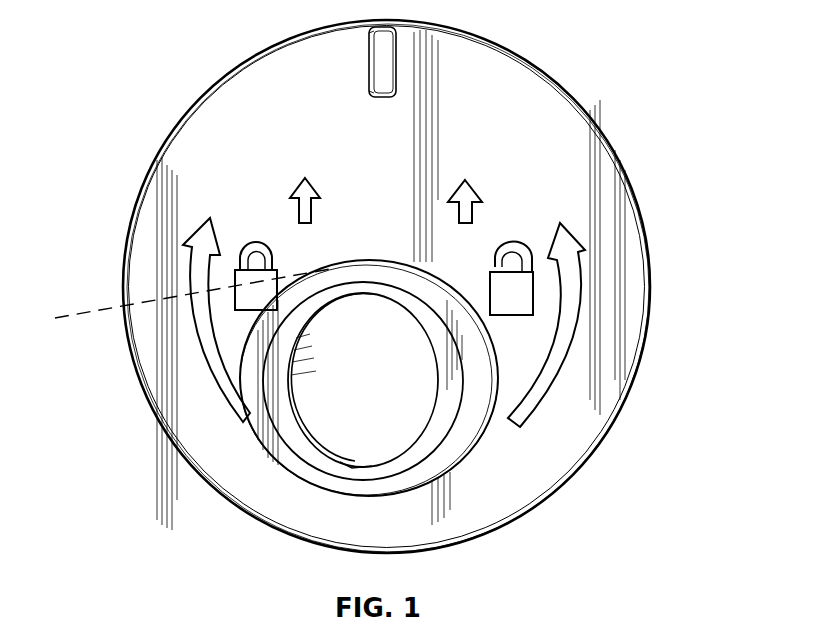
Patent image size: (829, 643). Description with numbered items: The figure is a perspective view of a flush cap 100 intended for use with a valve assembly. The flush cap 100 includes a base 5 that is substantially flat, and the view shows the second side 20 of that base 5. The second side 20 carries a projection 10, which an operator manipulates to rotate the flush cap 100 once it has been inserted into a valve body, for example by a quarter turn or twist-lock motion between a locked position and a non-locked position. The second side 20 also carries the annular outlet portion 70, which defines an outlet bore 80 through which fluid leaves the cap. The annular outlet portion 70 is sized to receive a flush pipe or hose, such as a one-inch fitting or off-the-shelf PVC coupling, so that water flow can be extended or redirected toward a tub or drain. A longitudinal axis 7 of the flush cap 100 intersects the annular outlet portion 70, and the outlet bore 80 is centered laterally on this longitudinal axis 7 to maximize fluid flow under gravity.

The flush cap 100 is at (672, 42).
The base 5 is at (514, 52).
The projection 10 is at (392, 55).
The second side 20 is at (174, 181).
The longitudinal axis 7 is at (78, 313).
The annular outlet portion 70 is at (467, 433).
The outlet bore 80 is at (330, 478).